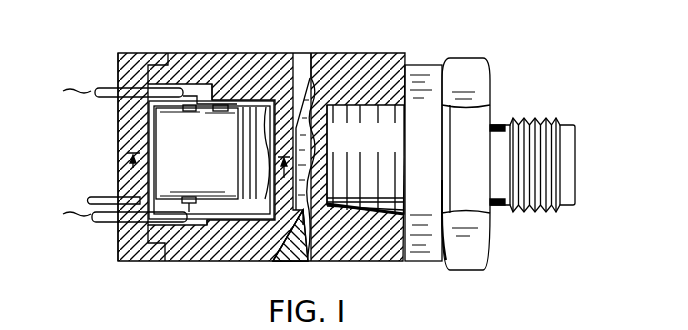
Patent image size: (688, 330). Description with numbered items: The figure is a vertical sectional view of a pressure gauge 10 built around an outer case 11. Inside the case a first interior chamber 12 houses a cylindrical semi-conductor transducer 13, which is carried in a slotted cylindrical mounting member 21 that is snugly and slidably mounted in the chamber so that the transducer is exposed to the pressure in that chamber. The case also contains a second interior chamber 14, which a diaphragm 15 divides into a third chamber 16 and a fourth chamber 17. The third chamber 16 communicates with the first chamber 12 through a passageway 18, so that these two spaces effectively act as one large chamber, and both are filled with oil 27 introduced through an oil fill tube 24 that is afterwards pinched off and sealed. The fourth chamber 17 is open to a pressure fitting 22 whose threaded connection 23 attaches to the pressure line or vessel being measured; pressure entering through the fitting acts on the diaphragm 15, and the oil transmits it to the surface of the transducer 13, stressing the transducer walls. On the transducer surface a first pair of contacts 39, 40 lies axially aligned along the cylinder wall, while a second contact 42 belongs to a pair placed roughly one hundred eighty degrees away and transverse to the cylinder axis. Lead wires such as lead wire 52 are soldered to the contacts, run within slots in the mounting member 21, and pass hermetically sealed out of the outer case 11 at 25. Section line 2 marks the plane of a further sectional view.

The pressure gauge 10 is at (231, 266).
The outer case 11 is at (284, 258).
The first interior chamber 12 is at (154, 145).
The semi-conductor transducer 13 is at (163, 127).
The second interior chamber 14 is at (334, 104).
The diaphragm 15 is at (305, 222).
The third chamber 16 is at (309, 75).
The fourth chamber 17 is at (315, 147).
The passageway 18 is at (289, 143).
The cylindrical mounting member 21 is at (228, 100).
The pressure fitting 22 is at (485, 218).
The threaded connection 23 is at (542, 212).
The oil fill tube 24 is at (107, 195).
The lead wire exit 25 is at (133, 88).
The oil 27 is at (297, 238).
The first contact 39 is at (189, 111).
The first contact 40 is at (214, 111).
The second contact 42 is at (223, 178).
The second lead wire 52 is at (86, 214).
The section line 2 is at (208, 177).